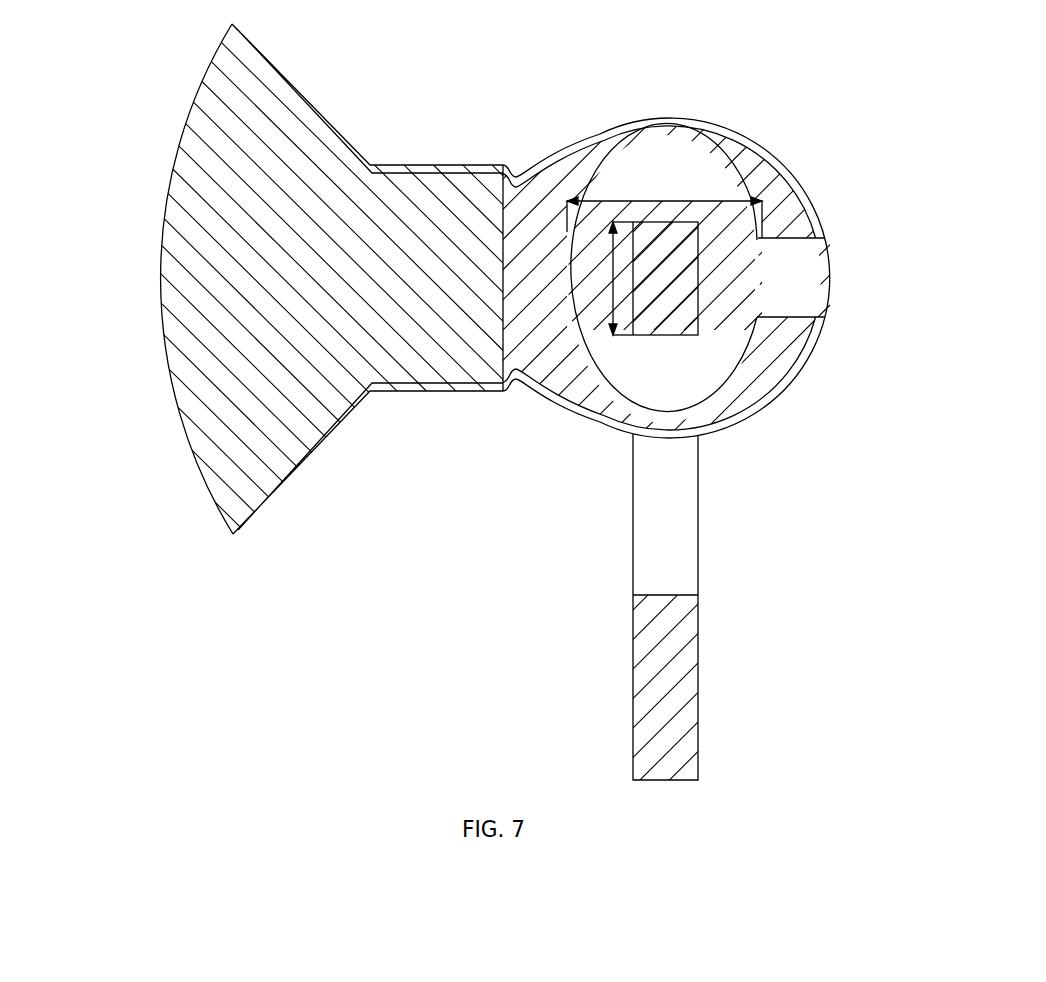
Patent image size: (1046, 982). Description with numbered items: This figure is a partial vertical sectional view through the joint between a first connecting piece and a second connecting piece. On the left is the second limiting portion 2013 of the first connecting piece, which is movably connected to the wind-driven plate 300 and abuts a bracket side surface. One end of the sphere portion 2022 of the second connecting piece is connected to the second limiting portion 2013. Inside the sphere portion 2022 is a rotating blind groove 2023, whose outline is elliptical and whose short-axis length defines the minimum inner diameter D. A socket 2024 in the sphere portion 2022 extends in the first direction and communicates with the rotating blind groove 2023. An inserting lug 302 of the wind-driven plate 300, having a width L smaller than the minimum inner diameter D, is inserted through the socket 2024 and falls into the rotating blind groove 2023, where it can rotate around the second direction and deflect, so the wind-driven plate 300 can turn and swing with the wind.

The second limiting portion 2013 is at (247, 173).
The sphere portion 2022 is at (577, 172).
The rotating blind groove 2023 is at (700, 172).
The socket 2024 is at (790, 277).
The inserting lug 302 is at (670, 302).
The wind-driven plate 300 is at (662, 700).